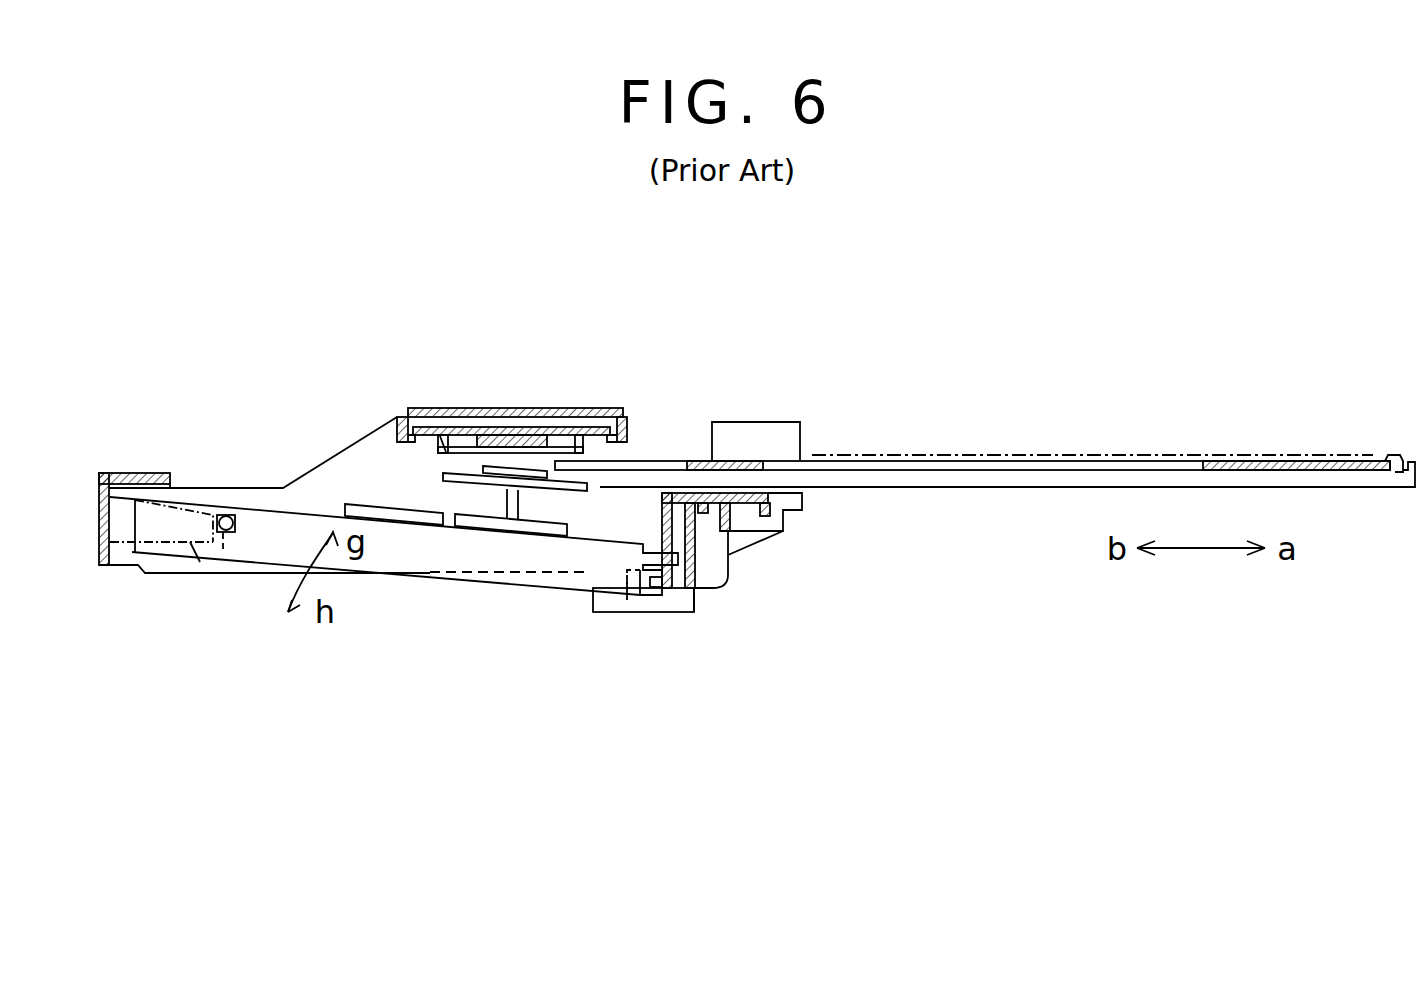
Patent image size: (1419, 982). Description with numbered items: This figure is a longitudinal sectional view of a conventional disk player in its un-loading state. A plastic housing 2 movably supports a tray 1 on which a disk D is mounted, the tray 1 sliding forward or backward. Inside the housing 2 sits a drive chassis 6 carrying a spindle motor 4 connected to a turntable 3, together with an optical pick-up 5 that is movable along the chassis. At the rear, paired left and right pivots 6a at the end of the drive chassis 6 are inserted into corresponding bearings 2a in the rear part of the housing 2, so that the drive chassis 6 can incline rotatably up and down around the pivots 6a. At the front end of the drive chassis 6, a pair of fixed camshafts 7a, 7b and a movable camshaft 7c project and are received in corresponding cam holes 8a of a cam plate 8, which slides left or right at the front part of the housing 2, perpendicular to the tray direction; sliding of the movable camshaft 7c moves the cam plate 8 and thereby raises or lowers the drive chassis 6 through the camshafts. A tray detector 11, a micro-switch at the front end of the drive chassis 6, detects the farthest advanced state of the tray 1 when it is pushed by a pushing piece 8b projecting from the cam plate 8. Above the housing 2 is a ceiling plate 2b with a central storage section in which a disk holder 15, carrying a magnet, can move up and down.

The tray 1 is at (965, 489).
The housing 2 is at (103, 566).
The bearings 2a is at (228, 540).
The ceiling plate 2b is at (567, 408).
The turntable 3 is at (443, 480).
The spindle motor 4 is at (492, 524).
The optical pick-up 5 is at (395, 514).
The drive chassis 6 is at (543, 582).
The pivots 6a is at (223, 515).
The fixed camshaft 7a is at (690, 560).
The fixed camshaft 7b is at (725, 517).
The movable camshaft 7c is at (765, 509).
The cam plate 8 is at (660, 501).
The cam holes 8a is at (675, 575).
The pushing piece 8b is at (648, 597).
The tray detector 11 is at (630, 602).
The disk holder 15 is at (471, 434).
The disk D is at (1100, 455).